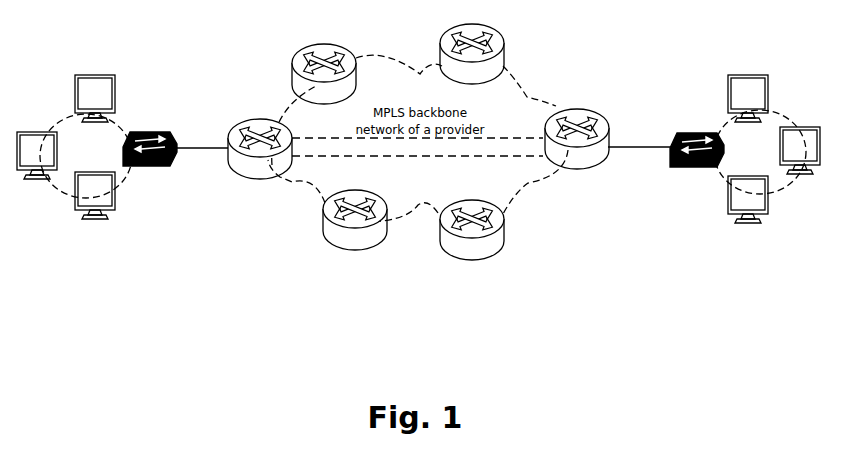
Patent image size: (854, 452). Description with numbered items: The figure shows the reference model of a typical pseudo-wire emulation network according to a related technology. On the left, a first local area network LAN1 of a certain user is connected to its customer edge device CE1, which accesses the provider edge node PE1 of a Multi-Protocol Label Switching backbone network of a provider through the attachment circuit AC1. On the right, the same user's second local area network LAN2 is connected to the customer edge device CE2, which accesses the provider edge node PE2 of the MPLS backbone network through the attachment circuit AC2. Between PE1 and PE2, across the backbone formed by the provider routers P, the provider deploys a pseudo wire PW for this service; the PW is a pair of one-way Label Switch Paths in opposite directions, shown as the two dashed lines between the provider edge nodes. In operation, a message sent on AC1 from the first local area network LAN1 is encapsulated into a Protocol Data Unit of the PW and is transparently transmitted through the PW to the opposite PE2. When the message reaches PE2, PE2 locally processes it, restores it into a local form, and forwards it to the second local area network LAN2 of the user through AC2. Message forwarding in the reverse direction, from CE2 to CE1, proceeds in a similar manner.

The local area network 1 LAN1 is at (74, 147).
The Customer Edge 1 CE1 is at (144, 172).
The Attachment Circuit 1 AC1 is at (202, 137).
The element PE1 is at (260, 159).
The element P is at (398, 153).
The element PW is at (417, 157).
The element PE2 is at (577, 152).
The element AC2 is at (639, 158).
The element CE2 is at (697, 161).
The local area network 2 LAN2 is at (767, 149).